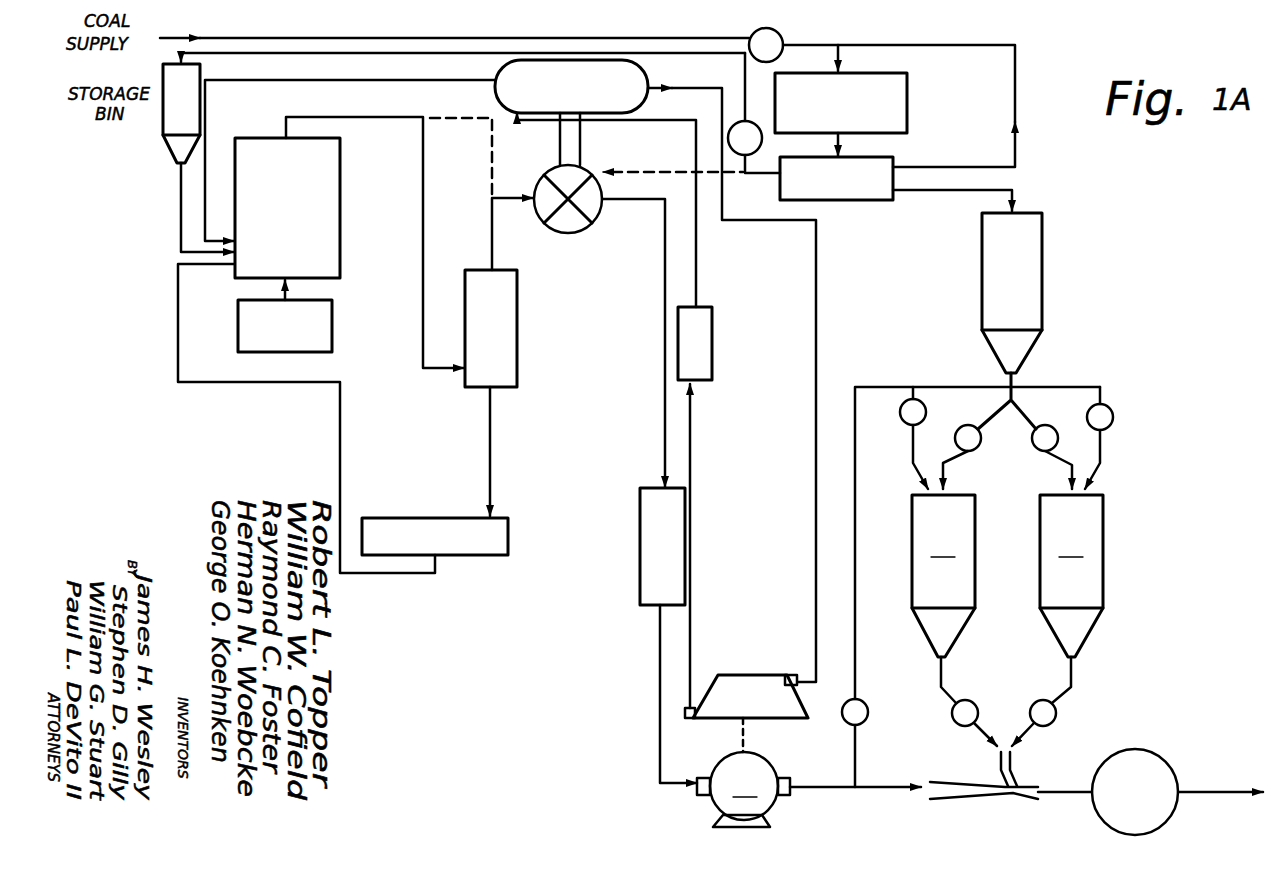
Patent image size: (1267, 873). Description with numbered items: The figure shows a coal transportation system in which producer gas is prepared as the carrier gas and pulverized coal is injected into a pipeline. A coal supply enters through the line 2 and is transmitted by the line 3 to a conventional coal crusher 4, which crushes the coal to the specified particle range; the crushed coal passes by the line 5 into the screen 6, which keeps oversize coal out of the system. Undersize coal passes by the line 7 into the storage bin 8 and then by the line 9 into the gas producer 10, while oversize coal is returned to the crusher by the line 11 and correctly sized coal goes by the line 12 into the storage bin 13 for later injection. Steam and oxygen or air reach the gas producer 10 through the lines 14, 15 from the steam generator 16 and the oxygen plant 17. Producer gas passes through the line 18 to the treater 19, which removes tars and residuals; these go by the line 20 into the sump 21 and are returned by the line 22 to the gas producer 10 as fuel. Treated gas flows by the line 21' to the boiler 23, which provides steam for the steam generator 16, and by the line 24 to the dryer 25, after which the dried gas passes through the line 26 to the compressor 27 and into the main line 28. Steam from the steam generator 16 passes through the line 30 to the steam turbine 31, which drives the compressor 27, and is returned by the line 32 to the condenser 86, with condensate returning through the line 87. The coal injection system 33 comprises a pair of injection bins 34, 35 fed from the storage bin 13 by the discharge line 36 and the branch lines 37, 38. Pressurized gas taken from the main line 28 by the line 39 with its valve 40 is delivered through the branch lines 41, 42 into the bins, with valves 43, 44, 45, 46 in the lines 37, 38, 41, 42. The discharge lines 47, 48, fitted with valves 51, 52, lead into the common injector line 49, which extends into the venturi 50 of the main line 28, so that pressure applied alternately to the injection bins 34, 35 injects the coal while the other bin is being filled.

The line 2 is at (560, 37).
The line 3 is at (843, 52).
The coal crusher 4 is at (907, 97).
The line 5 is at (846, 140).
The screen 6 is at (853, 200).
The line 7 is at (328, 53).
The storage bin 8 is at (165, 140).
The line 9 is at (180, 201).
The gas producer 10 is at (343, 200).
The line 11 is at (1015, 143).
The line 12 is at (953, 188).
The storage bin 13 is at (982, 290).
The line 14 is at (205, 105).
The line 15 is at (296, 292).
The steam generator 16 is at (495, 78).
The oxygen plant 17 is at (296, 352).
The line 18 is at (367, 117).
The treater 19 is at (518, 375).
The line 20 is at (490, 458).
The sump 21 is at (434, 551).
The line 21' is at (481, 194).
The line 22 is at (340, 415).
The boiler 23 is at (568, 233).
The line 24 is at (663, 420).
The dryer 25 is at (638, 580).
The line 26 is at (658, 708).
The compressor 27 is at (729, 783).
The main line 28 is at (880, 790).
The line 30 is at (814, 470).
The steam turbine 31 is at (752, 673).
The line 32 is at (692, 630).
The coal injection system 33 is at (1112, 489).
The injection bin 34 is at (943, 576).
The injection bin 35 is at (1071, 576).
The discharge line 36 is at (1018, 380).
The branch line 37 is at (955, 460).
The branch line 38 is at (1062, 462).
The line 39 is at (857, 650).
The valve 40 is at (868, 718).
The branch line 41 is at (913, 445).
The branch line 42 is at (1102, 440).
The valve 43 is at (968, 425).
The valve 44 is at (1045, 425).
The valve 45 is at (900, 412).
The valve 46 is at (1113, 417).
The discharge line 47 is at (943, 675).
The discharge line 48 is at (1075, 675).
The injector line 49 is at (1013, 770).
The venturi 50 is at (1030, 805).
The valve 51 is at (975, 703).
The valve 52 is at (1058, 718).
The condenser 86 is at (715, 350).
The line 87 is at (697, 265).